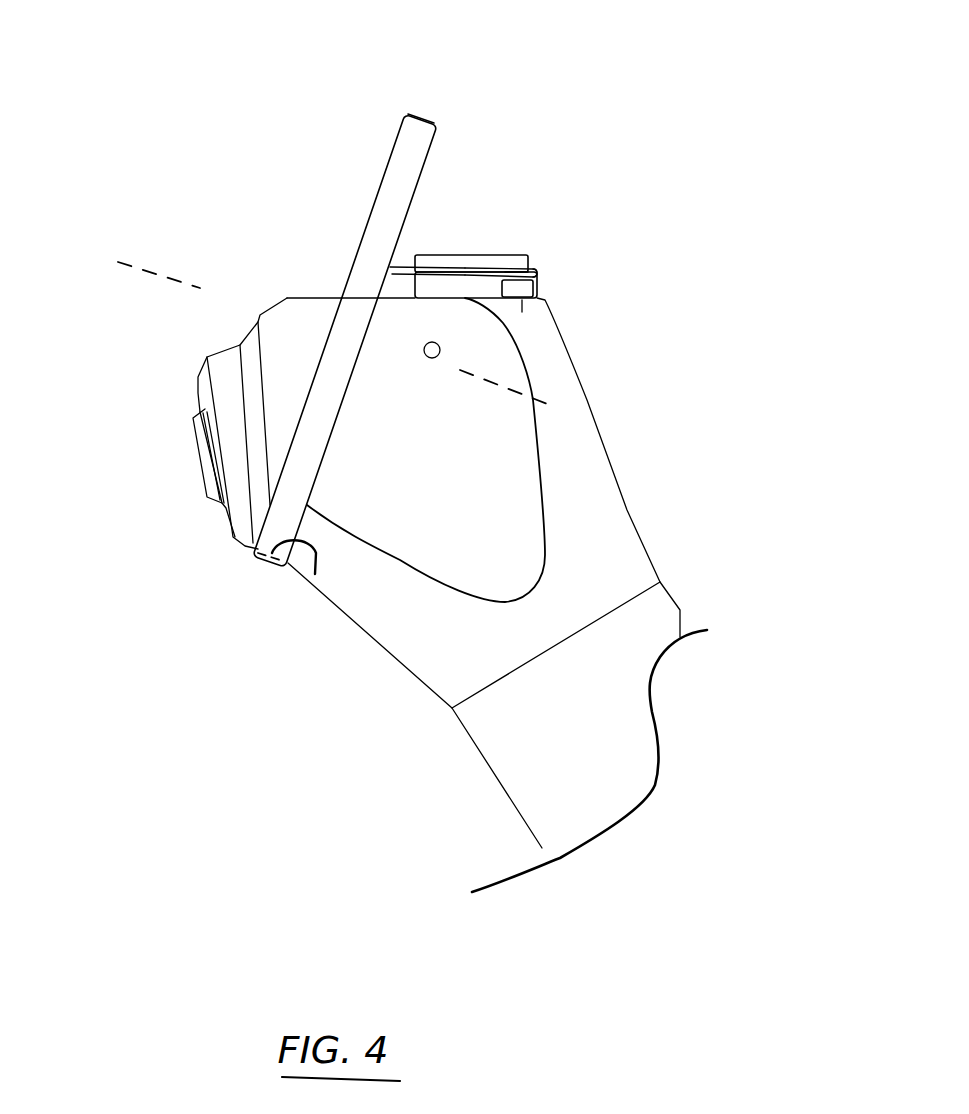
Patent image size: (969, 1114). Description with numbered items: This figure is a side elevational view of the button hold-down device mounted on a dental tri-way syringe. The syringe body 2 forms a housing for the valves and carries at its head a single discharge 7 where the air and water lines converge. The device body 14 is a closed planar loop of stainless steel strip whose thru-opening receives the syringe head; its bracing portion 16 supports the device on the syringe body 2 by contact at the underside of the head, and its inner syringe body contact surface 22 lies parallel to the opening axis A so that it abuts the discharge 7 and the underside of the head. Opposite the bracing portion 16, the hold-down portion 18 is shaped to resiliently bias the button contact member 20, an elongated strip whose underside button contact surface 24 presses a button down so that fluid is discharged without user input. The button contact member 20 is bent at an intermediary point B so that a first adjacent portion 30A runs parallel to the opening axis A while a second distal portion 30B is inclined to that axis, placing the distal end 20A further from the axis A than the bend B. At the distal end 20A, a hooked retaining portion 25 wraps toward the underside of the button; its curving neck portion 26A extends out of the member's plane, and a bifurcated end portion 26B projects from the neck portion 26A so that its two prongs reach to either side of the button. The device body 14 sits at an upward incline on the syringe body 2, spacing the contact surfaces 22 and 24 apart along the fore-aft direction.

The syringe body 2 is at (595, 500).
The discharge 7 is at (212, 507).
The device body 14 is at (422, 113).
The bracing portion 16 is at (254, 564).
The hold-down portion 18 is at (390, 155).
The button contact member 20 is at (443, 267).
The distal end 20A is at (522, 270).
The syringe body contact surface 22 is at (311, 573).
The button contact surface 24 is at (491, 280).
The hooked retaining portion 25 is at (542, 291).
The neck portion 26A is at (541, 280).
The end portion 26B is at (522, 300).
The first adjacent portion 30A is at (398, 266).
The second distal portion 30B is at (467, 272).
The opening axis A is at (157, 268).
The intermediary point B is at (398, 280).